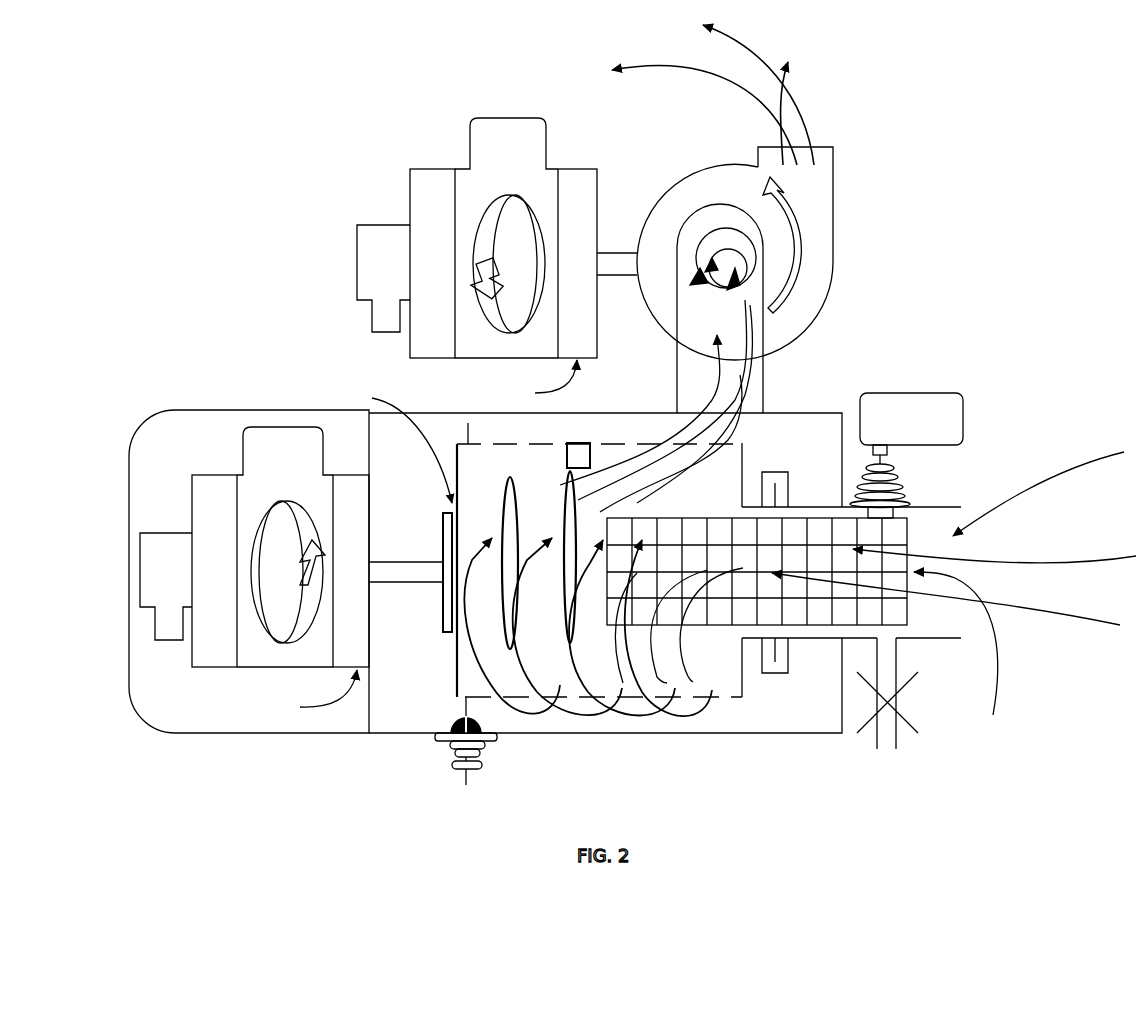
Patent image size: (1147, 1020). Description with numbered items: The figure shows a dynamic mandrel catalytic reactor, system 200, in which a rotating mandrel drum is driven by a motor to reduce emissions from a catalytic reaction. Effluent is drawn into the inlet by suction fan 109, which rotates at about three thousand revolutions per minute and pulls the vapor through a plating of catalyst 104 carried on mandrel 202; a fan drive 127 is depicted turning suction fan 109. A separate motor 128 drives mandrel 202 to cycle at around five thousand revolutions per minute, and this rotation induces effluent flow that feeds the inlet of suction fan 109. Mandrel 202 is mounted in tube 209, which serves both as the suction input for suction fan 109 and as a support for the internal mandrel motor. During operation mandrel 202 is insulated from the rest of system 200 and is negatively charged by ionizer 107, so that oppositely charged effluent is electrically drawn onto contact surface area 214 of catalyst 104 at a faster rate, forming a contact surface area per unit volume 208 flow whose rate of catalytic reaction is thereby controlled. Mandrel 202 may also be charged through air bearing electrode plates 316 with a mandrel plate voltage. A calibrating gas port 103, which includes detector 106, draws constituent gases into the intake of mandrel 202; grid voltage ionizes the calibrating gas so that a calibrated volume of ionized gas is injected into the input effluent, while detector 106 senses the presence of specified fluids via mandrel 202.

The system 200 is at (982, 135).
The suction fan 109 is at (820, 240).
The fan drive motor 127 is at (477, 262).
The motor 128 is at (254, 572).
The air bearing electrode plates 316 is at (560, 480).
The catalyst 104 is at (579, 447).
The contact surface area per unit volume flow 208 is at (653, 452).
The contact surface area 214 is at (560, 482).
The ionizer 107 is at (916, 425).
The mandrel 202 is at (458, 667).
The detector 106 is at (448, 752).
The tube 209 is at (185, 733).
The calibrating gas port 103 is at (768, 671).